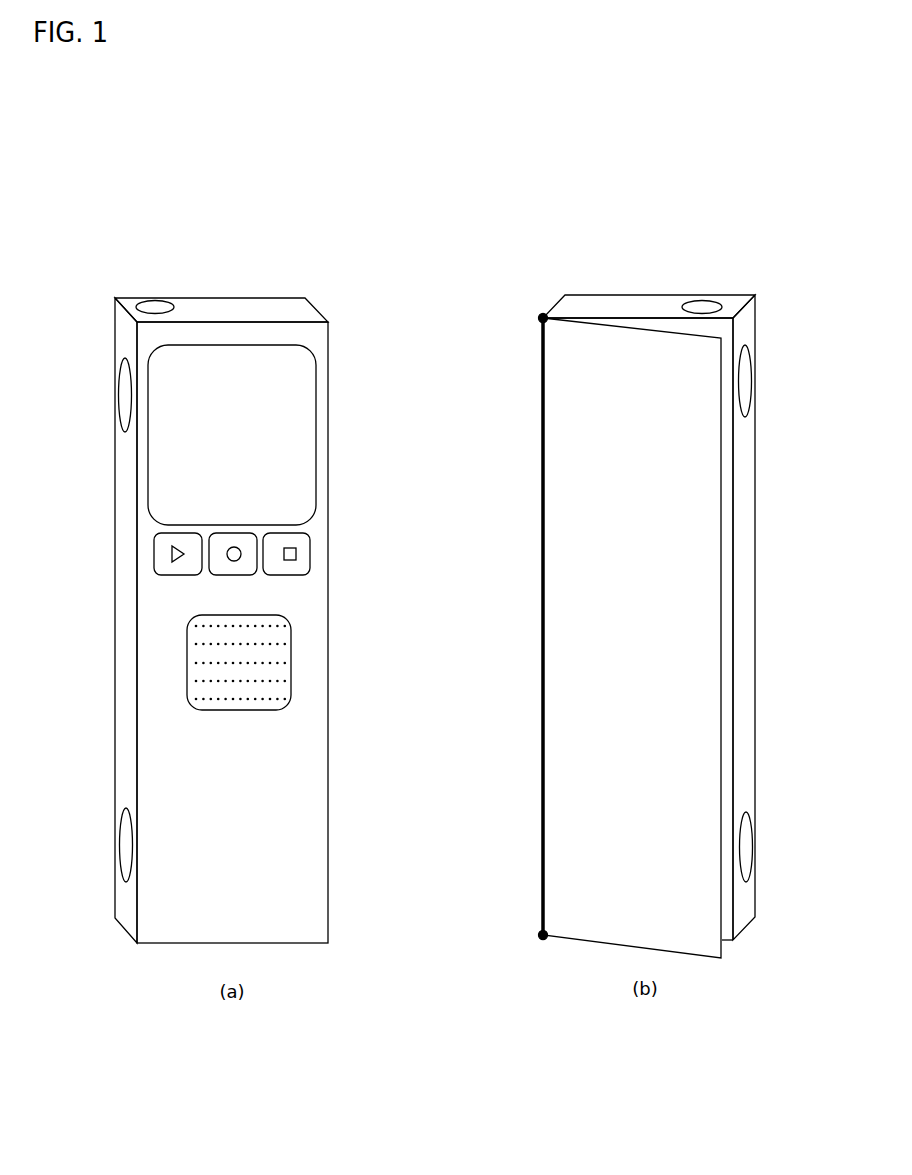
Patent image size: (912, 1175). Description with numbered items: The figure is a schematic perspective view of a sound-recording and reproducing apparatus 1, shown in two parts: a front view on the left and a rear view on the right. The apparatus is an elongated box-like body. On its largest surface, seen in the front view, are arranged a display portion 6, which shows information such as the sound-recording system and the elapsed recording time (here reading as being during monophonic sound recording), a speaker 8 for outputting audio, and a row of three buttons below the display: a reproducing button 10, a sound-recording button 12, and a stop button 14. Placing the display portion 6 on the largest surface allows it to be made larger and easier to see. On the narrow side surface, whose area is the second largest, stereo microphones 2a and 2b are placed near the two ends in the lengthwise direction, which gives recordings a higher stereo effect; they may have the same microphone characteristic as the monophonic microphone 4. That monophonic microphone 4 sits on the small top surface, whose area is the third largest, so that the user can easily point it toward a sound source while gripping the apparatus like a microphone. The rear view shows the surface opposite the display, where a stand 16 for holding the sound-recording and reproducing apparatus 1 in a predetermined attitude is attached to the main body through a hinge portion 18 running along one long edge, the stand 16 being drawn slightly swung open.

The sound-recording and reproducing apparatus 1 is at (229, 285).
The stereo microphone 2a is at (442, 375).
The stereo microphone 2b is at (443, 831).
The monophonic microphone 4 is at (429, 280).
The display portion 6 is at (274, 435).
The speaker 8 is at (225, 710).
The reproducing button 10 is at (129, 531).
The sound-recording button 12 is at (143, 613).
The stop button 14 is at (337, 534).
The stand 16 is at (683, 638).
The hinge portion 18 is at (511, 627).